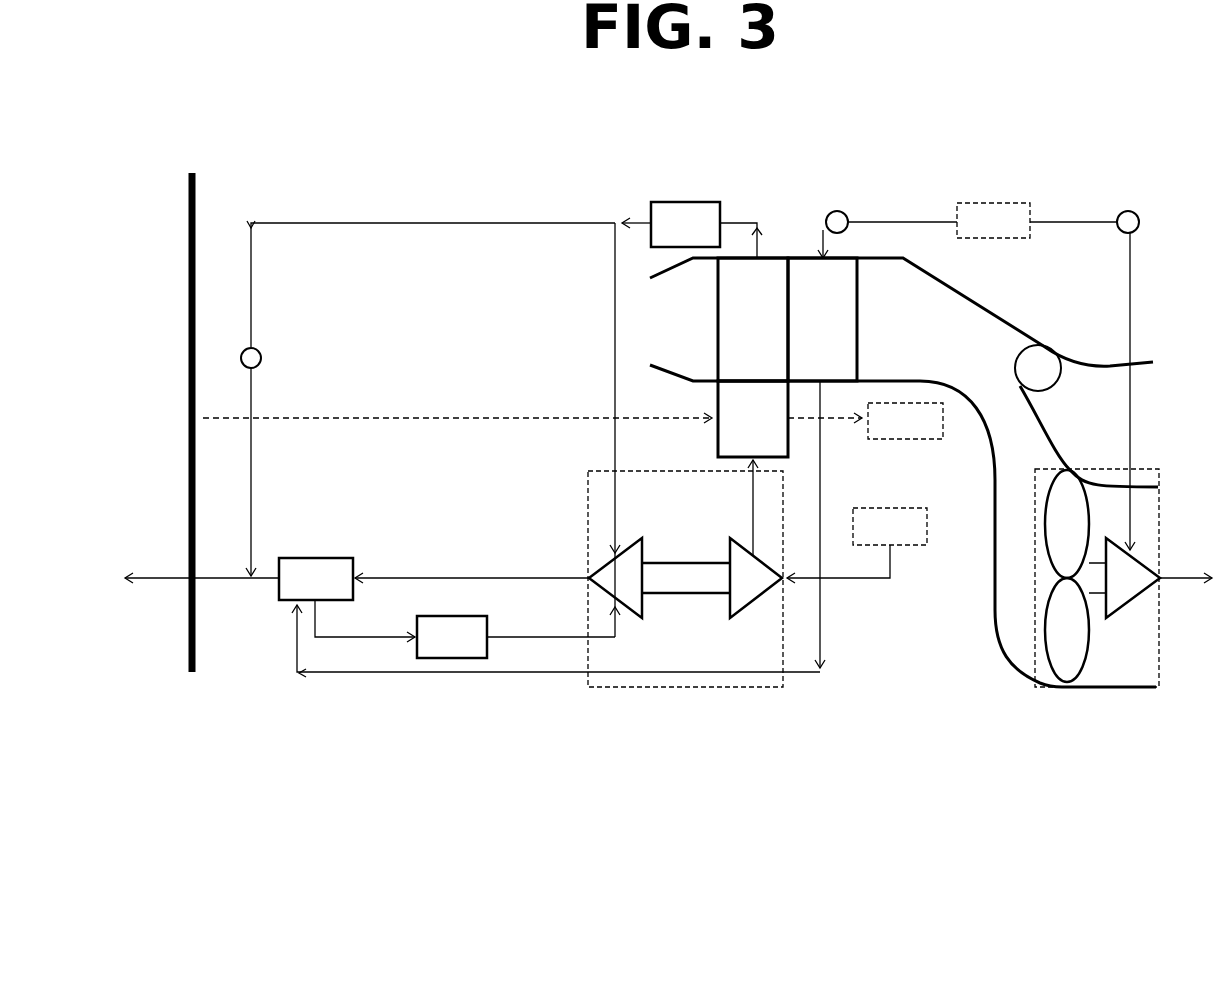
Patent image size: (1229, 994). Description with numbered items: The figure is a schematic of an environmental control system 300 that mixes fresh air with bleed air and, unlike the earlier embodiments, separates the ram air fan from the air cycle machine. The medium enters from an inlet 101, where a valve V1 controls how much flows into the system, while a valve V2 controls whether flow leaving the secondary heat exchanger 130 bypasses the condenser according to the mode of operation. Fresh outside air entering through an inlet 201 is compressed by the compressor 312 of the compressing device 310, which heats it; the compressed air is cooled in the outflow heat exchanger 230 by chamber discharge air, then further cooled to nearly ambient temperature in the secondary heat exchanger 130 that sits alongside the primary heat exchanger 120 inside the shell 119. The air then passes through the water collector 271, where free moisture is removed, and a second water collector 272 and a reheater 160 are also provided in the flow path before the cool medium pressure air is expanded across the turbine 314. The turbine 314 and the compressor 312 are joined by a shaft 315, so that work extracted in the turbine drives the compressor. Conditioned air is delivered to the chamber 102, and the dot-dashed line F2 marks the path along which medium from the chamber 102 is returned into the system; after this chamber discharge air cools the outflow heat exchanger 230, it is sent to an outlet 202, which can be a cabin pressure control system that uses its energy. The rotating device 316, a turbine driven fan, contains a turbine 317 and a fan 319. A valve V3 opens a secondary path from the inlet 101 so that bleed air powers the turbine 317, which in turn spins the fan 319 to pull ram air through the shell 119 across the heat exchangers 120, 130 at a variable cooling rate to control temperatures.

The environmental control system 300 is at (1100, 89).
The chamber 102 is at (190, 173).
The valve V2 is at (243, 354).
The valve V1 is at (826, 214).
The valve V3 is at (1118, 213).
The dot-dashed line F2 is at (400, 417).
The water collector 271 is at (692, 230).
The inlet 101 is at (1037, 220).
The secondary heat exchanger 130 is at (753, 319).
The primary heat exchanger 120 is at (822, 319).
The outflow heat exchanger 230 is at (753, 419).
The shell 119 is at (1040, 345).
The outlet 202 is at (620, 529).
The inlet 201 is at (857, 543).
The reheater 160 is at (434, 597).
The water collector 272 is at (516, 637).
The compressing device 310 is at (670, 690).
The turbine 314 is at (615, 578).
The compressor 312 is at (756, 539).
The shaft 315 is at (670, 561).
The fan 319 is at (1082, 472).
The turbine 317 is at (1159, 578).
The rotating device 316 is at (1033, 690).